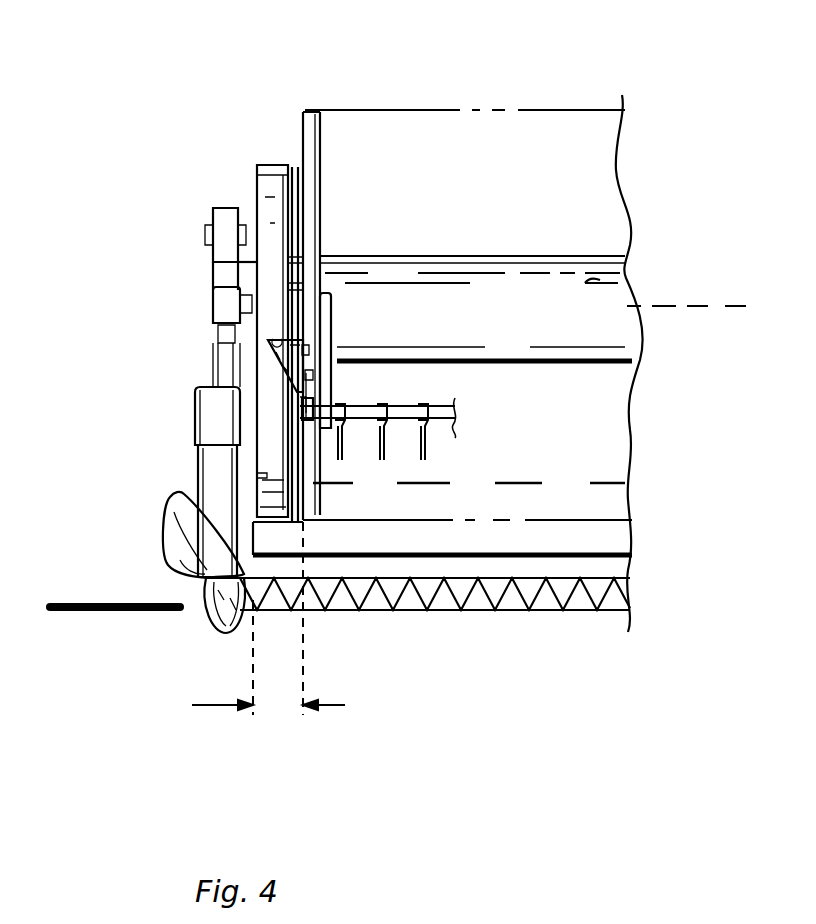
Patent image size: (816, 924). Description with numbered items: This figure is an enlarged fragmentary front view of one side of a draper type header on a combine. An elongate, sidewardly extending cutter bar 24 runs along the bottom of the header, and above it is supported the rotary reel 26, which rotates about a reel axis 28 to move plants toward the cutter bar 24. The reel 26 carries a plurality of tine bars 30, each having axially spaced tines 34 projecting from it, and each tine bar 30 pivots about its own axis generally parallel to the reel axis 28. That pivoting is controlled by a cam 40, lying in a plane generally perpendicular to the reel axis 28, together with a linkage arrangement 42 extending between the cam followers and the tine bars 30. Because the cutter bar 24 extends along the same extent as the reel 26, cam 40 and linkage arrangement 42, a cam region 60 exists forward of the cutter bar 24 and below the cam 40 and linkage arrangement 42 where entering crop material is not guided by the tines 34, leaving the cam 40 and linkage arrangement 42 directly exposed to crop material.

The rotary reel 26 is at (421, 100).
The cutter bar 24 is at (568, 612).
The reel axis 28 is at (697, 307).
The cam 40 is at (274, 164).
The linkage arrangement 42 is at (332, 322).
The tine bar 30 is at (470, 413).
The tines 34 is at (428, 446).
The cam region 60 is at (212, 705).